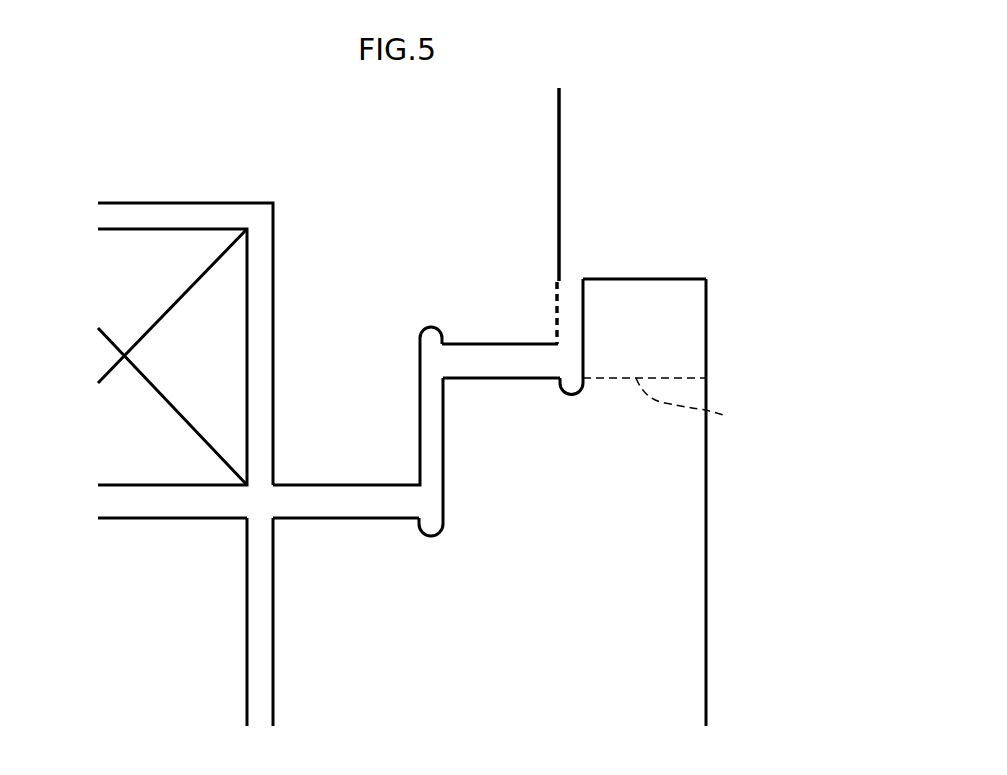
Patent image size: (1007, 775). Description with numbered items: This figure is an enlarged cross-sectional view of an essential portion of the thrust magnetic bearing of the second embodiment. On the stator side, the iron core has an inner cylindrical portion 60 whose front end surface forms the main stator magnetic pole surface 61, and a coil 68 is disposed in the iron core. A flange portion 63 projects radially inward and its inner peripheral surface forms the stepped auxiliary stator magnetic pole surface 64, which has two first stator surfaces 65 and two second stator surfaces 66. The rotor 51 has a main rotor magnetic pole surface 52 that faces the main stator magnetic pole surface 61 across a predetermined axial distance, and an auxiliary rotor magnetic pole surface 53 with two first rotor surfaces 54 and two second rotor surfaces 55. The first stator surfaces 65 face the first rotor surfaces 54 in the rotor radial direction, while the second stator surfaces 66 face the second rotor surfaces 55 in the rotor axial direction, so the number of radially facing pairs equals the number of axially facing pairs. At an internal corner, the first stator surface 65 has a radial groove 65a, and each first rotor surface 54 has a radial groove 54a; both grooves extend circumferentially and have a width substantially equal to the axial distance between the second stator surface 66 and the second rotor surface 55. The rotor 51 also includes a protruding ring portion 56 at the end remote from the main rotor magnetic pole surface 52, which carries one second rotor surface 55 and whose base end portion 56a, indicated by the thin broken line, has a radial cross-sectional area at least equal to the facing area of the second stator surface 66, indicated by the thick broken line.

The rotor 51 is at (716, 530).
The main rotor magnetic pole surface 52 is at (272, 638).
The auxiliary rotor magnetic pole surface 53 is at (371, 520).
The first rotor surface 54 is at (503, 383).
The radial groove 54a is at (443, 535).
The second rotor surface 55 is at (442, 470).
The protruding ring portion 56 is at (692, 330).
The base end portion 56a is at (716, 409).
The inner cylindrical portion 60 is at (117, 640).
The main stator magnetic pole surface 61 is at (247, 578).
The flange portion 63 is at (566, 111).
The auxiliary stator magnetic pole surface 64 is at (362, 487).
The first stator surface 65 is at (493, 342).
The radial groove 65a is at (421, 328).
The second stator surface 66 is at (553, 293).
The coil 68 is at (117, 442).